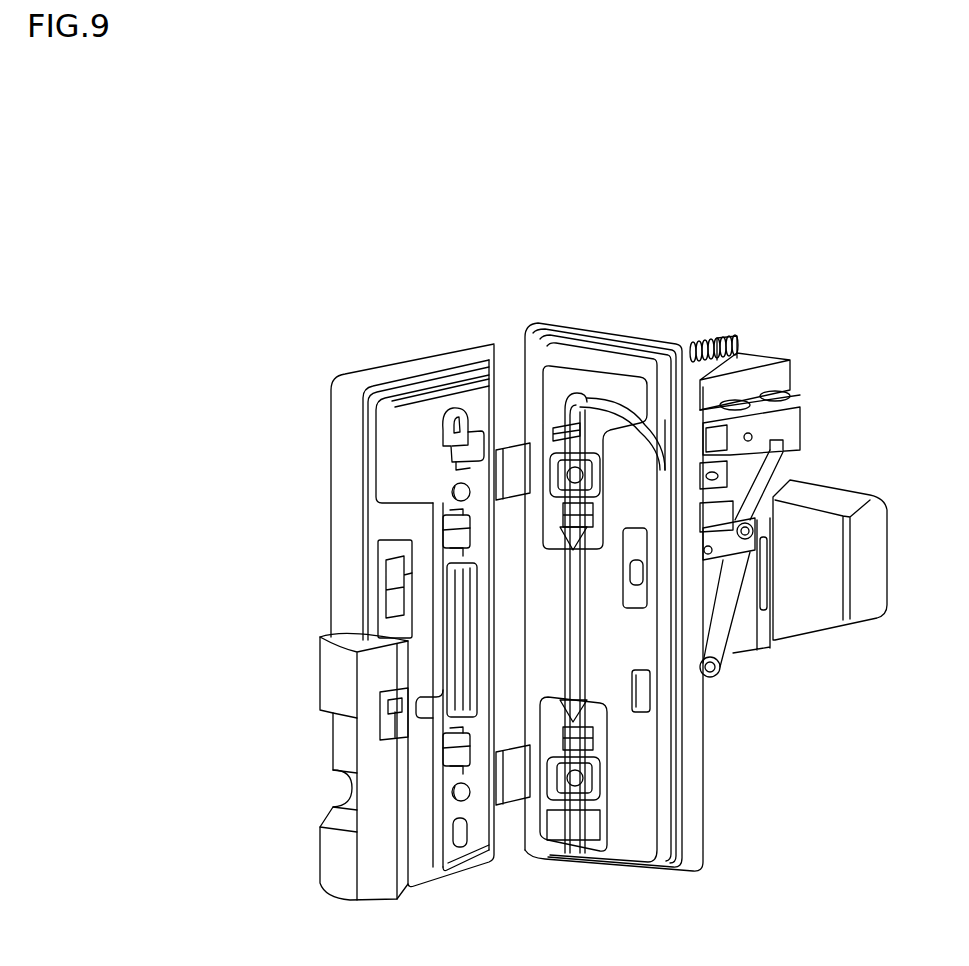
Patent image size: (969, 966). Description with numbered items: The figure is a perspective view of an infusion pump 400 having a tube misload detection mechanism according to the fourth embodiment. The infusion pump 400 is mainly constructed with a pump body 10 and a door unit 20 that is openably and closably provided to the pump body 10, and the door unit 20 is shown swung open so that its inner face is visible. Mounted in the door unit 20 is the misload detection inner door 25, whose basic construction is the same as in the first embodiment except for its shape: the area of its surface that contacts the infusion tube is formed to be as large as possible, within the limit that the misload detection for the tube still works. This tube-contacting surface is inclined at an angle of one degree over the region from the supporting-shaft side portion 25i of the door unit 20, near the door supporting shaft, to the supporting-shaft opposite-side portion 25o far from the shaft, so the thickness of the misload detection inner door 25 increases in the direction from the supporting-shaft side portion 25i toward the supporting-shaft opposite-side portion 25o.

The infusion pump 400 is at (119, 228).
The door unit 20 is at (318, 360).
The pump body 10 is at (608, 314).
The misload detection inner door 25 is at (407, 453).
The supporting-shaft opposite-side portion 25o is at (390, 402).
The supporting-shaft side portion 25i is at (483, 374).